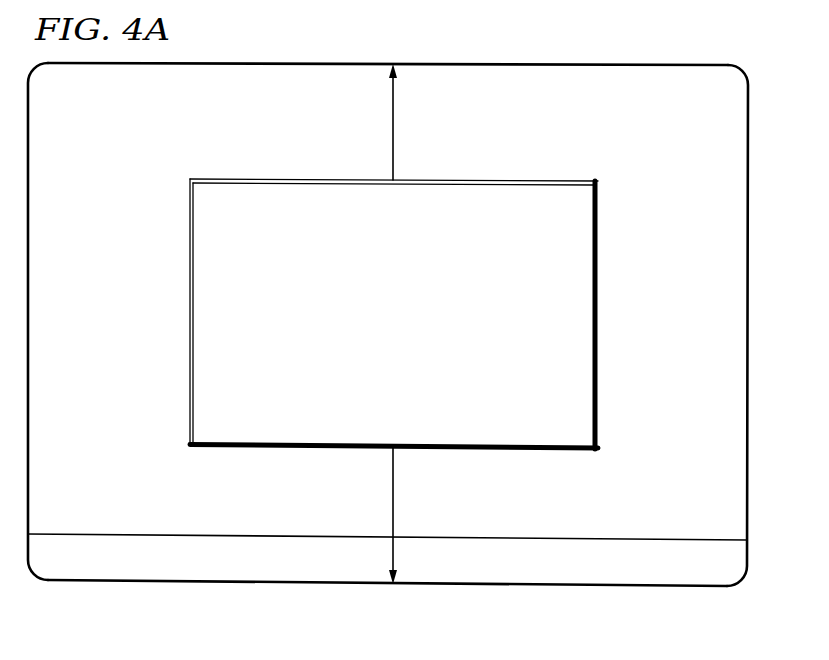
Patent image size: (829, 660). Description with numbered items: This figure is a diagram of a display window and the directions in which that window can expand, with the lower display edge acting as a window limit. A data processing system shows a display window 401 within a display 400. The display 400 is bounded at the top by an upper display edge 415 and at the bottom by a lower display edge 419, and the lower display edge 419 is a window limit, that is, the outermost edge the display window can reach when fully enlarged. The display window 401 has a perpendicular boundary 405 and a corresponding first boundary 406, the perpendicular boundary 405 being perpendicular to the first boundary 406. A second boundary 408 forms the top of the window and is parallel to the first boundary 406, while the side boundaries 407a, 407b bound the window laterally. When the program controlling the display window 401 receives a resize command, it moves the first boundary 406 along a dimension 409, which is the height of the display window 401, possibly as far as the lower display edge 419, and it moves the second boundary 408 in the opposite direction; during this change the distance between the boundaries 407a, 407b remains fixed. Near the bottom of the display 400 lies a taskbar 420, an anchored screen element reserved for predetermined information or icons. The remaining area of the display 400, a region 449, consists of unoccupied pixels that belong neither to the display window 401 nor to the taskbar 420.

The display 400 is at (546, 57).
The display window 401 is at (414, 322).
The perpendicular boundary 405 is at (190, 355).
The first boundary 406 is at (334, 450).
The boundary 407a is at (190, 268).
The boundary 407b is at (598, 270).
The second boundary 408 is at (313, 179).
The dimension 409 is at (393, 497).
The upper display edge 415 is at (291, 62).
The lower display edge 419 is at (493, 586).
The taskbar 420 is at (535, 529).
The region 449 is at (594, 137).